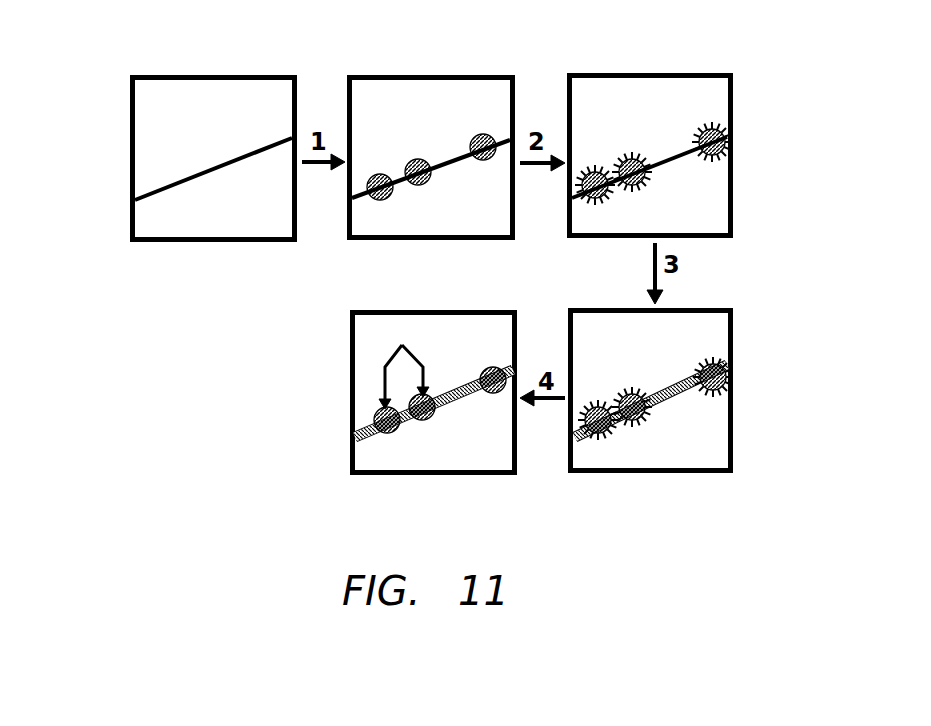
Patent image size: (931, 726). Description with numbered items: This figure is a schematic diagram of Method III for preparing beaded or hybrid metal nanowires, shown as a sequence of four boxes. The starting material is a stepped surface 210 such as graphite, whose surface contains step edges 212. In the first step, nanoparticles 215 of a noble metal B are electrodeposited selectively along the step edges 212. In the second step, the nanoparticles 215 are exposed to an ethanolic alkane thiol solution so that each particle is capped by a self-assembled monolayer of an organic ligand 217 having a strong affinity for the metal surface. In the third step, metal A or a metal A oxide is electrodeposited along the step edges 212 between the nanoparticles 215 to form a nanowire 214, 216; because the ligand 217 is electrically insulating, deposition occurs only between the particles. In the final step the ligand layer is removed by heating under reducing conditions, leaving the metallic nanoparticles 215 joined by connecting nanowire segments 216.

The stepped surface 210 is at (143, 118).
The step edges 212 is at (147, 190).
The metal A or metal A oxide nanowire 214 is at (680, 405).
The metal B nanoparticles 215 is at (488, 135).
The connecting nanowire segments 216 is at (467, 408).
The organic ligand 217 is at (690, 140).